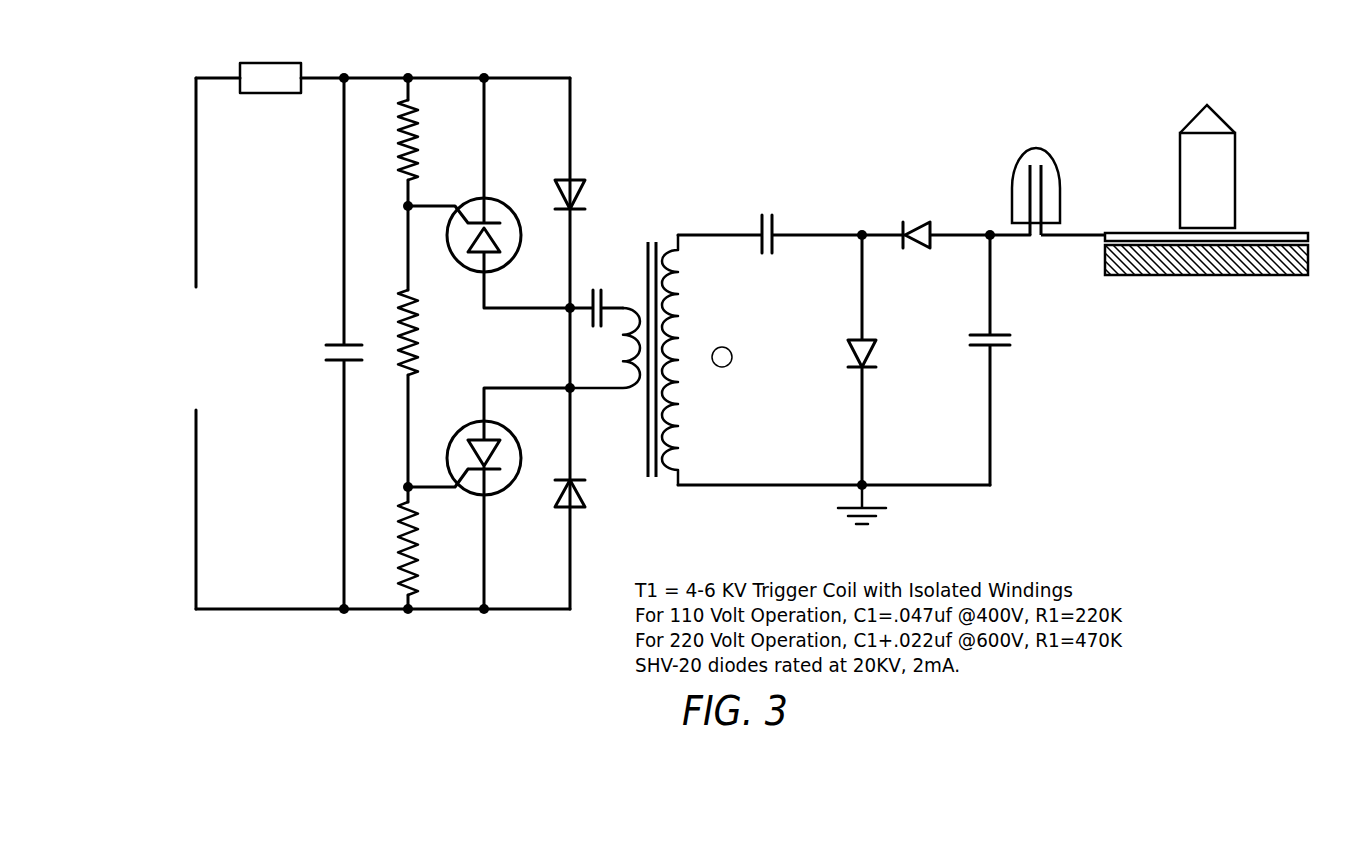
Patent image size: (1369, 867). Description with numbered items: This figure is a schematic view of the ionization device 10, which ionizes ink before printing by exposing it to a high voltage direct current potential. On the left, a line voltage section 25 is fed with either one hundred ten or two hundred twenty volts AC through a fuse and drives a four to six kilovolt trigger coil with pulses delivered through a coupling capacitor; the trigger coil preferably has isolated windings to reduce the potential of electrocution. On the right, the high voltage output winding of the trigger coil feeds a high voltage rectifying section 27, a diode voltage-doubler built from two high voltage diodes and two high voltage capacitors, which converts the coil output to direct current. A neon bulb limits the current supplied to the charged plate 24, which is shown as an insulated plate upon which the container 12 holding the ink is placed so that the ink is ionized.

The ionization device 10 is at (1092, 36).
The container 12 is at (1180, 152).
The charged plate 24 is at (1105, 256).
The line voltage section 25 is at (618, 118).
The high voltage circuit 27 is at (847, 143).